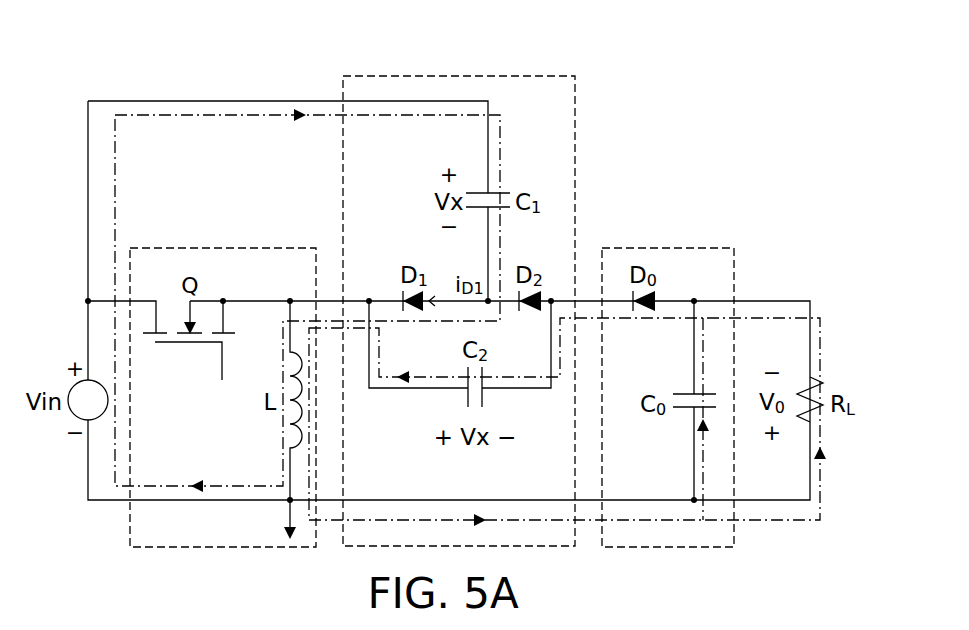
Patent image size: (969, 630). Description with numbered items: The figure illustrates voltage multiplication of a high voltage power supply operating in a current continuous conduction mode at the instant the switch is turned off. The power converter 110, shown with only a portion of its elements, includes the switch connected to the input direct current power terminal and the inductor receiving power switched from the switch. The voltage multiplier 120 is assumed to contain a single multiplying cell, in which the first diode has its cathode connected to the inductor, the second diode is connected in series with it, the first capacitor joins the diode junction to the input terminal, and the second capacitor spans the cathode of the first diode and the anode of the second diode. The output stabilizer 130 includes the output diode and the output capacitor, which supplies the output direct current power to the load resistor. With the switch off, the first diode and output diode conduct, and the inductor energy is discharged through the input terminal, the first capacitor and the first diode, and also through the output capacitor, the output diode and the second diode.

The power converter 110 is at (212, 248).
The voltage multiplier 120 is at (444, 76).
The output stabilizer 130 is at (651, 248).